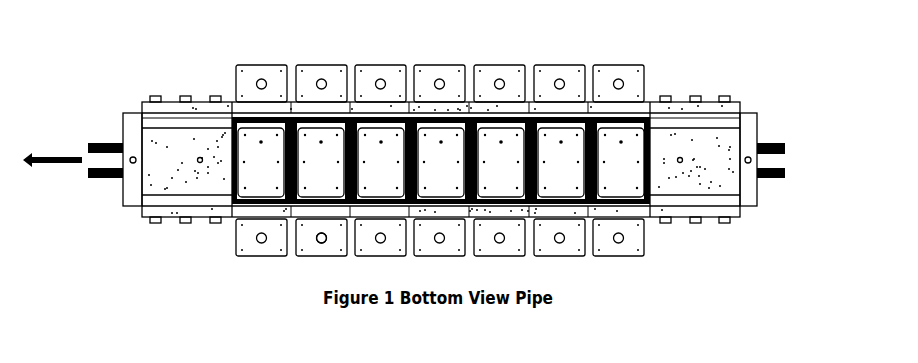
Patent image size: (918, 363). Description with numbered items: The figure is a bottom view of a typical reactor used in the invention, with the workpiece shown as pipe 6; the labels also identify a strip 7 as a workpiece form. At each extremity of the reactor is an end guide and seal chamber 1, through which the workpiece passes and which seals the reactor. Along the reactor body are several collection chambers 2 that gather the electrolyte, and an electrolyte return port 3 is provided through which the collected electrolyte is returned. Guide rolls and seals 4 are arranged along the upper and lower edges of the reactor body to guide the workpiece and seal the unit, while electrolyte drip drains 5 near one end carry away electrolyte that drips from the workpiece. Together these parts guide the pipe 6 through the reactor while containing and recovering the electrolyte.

The end guide and seal chamber 1 is at (179, 173).
The collection chamber 2 is at (347, 200).
The electrolyte return port 3 is at (188, 292).
The guide rolls and seals 4 is at (692, 86).
The electrolyte drip drains 5 is at (749, 145).
The pipe 6 is at (770, 186).
The strip 7 is at (406, 253).